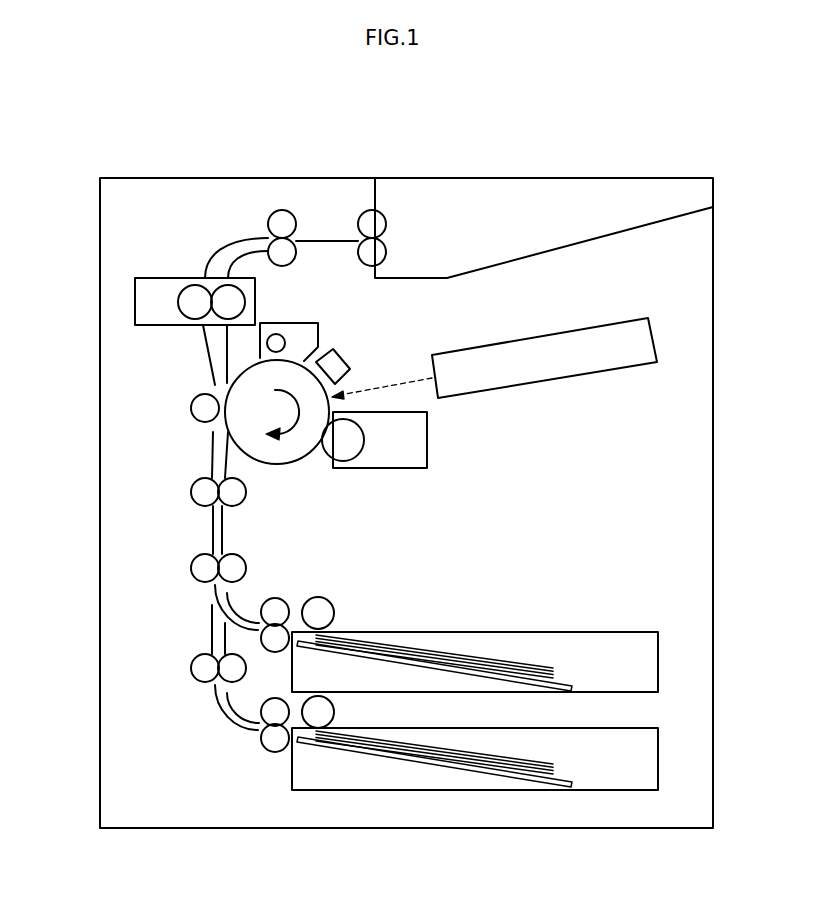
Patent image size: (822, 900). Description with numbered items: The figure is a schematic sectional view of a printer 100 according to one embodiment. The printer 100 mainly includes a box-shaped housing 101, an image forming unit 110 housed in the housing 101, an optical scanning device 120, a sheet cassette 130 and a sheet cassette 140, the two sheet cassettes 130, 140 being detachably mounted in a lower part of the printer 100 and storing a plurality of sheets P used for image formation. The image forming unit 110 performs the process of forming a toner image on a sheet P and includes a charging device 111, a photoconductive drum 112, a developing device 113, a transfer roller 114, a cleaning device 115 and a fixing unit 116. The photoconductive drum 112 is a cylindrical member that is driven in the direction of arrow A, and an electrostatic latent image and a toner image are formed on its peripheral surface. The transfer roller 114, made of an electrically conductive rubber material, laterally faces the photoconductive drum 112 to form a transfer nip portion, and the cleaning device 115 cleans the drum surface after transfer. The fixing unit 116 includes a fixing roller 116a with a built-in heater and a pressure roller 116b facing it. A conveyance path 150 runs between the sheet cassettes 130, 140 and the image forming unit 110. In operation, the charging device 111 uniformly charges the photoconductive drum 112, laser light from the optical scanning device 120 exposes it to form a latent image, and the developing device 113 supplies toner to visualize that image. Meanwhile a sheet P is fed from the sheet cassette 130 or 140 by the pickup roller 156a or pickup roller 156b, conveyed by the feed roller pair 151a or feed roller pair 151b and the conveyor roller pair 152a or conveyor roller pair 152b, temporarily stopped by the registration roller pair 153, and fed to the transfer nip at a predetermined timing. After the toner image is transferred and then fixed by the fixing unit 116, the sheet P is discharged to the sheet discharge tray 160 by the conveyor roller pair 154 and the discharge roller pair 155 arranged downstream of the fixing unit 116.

The printer 100 is at (447, 449).
The housing 101 is at (713, 283).
The image forming unit 110 is at (425, 326).
The charging device 111 is at (344, 352).
The photoconductive drum 112 is at (235, 383).
The developing device 113 is at (388, 468).
The transfer roller 114 is at (191, 408).
The cleaning device 115 is at (288, 323).
The fixing unit 116 is at (143, 264).
The fixing roller 116a is at (187, 297).
The pressure roller 116b is at (223, 293).
The optical scanning device 120 is at (580, 373).
The sheet cassette 130 is at (623, 632).
The sheet cassette 140 is at (603, 728).
The conveyance path 150 is at (289, 695).
The feed roller pair 151a is at (280, 598).
The feed roller pair 151b is at (275, 752).
The conveyor roller pair 152a is at (191, 568).
The conveyor roller pair 152b is at (191, 668).
The registration roller pair 153 is at (191, 492).
The conveyor roller pair 154 is at (278, 210).
The discharge roller pair 155 is at (383, 213).
The pickup roller 156a is at (334, 607).
The pickup roller 156b is at (334, 712).
The sheet discharge tray 160 is at (543, 248).
The sheet P is at (503, 660).